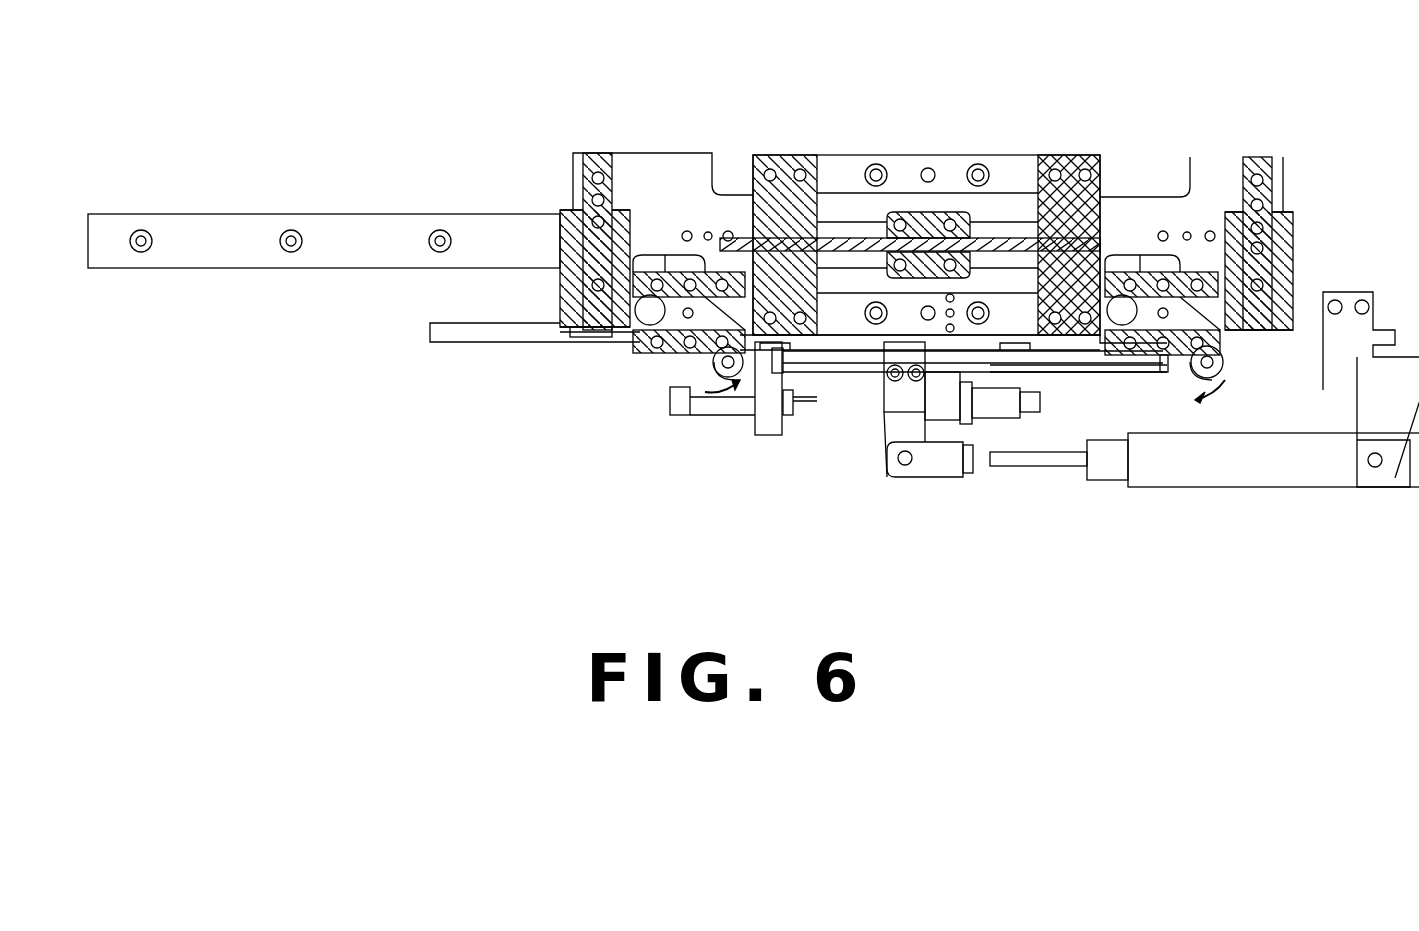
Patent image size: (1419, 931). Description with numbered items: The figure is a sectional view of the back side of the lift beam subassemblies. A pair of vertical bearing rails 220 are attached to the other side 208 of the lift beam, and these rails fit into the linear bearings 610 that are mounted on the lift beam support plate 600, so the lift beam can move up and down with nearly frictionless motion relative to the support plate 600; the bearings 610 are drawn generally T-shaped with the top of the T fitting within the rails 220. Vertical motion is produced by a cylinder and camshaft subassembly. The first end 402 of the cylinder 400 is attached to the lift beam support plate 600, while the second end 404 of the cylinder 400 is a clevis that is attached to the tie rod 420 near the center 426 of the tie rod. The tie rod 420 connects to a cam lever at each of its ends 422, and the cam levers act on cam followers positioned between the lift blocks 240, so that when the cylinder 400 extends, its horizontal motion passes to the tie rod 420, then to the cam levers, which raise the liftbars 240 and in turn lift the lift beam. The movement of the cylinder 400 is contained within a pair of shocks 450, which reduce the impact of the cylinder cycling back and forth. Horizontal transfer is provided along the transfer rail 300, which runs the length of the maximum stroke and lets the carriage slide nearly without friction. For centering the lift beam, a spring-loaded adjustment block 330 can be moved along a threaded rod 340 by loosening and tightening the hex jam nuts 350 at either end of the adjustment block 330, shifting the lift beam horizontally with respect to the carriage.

The transfer rail 300 is at (221, 228).
The threaded rod 340 is at (438, 327).
The lift beam support plate 600 is at (652, 150).
The linear bearing 610 is at (598, 163).
The vertical bearing rail 220 is at (568, 210).
The hex jam nut 350 is at (865, 235).
The adjustment block 330 is at (925, 215).
The other side of the lift beam 208 is at (1212, 168).
The lift block 240 is at (1320, 256).
The shock 450 is at (715, 366).
The tie rod 420 is at (837, 368).
The center of the tie rod 426 is at (885, 380).
The second end of the cylinder 404 is at (910, 472).
The end of the tie rod 422 is at (1192, 372).
The cylinder 400 is at (1258, 455).
The first end of the cylinder 402 is at (1377, 470).